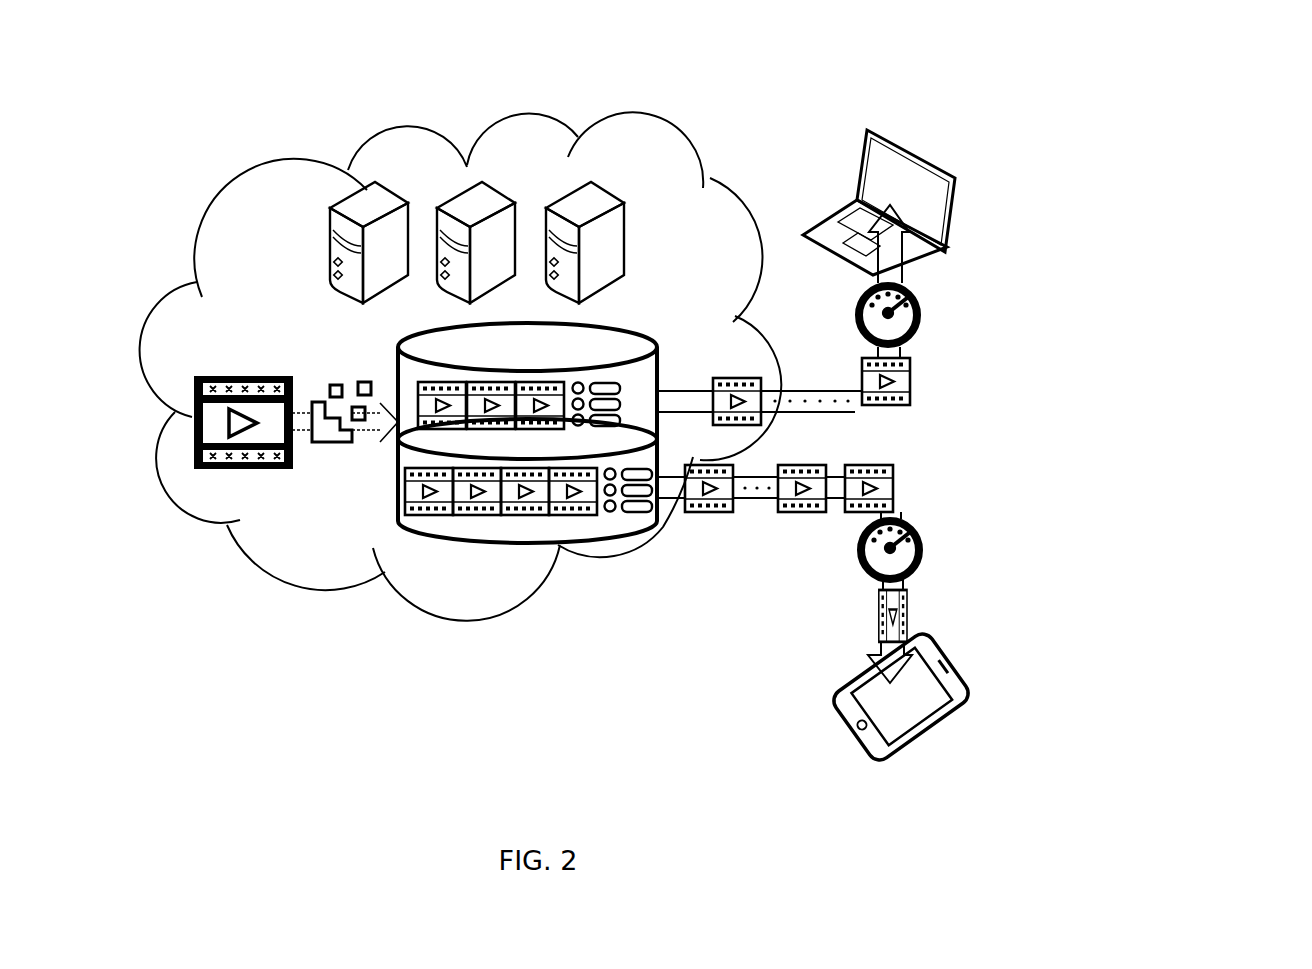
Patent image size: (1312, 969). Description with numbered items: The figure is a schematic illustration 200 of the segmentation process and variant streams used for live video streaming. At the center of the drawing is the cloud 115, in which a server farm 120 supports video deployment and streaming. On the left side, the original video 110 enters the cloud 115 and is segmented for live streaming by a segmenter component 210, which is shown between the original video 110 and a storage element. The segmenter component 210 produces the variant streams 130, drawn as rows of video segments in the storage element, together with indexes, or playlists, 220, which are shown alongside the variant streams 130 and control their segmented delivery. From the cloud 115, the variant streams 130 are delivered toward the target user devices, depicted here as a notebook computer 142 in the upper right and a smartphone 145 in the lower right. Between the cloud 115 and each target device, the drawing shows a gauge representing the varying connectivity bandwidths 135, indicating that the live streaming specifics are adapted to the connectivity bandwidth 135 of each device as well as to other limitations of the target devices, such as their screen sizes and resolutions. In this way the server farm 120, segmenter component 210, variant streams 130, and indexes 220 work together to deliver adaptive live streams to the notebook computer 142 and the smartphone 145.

The schematic illustration 200 is at (1293, 57).
The cloud 115 is at (258, 165).
The server farm 120 is at (328, 253).
The original video 110 is at (193, 393).
The segmenter component 210 is at (335, 448).
The variant streams 130 is at (520, 517).
The indexes (playlists) 220 is at (637, 513).
The notebook computers 142 is at (935, 252).
The connectivity bandwidths 135 is at (910, 532).
The smartphones 145 is at (840, 720).